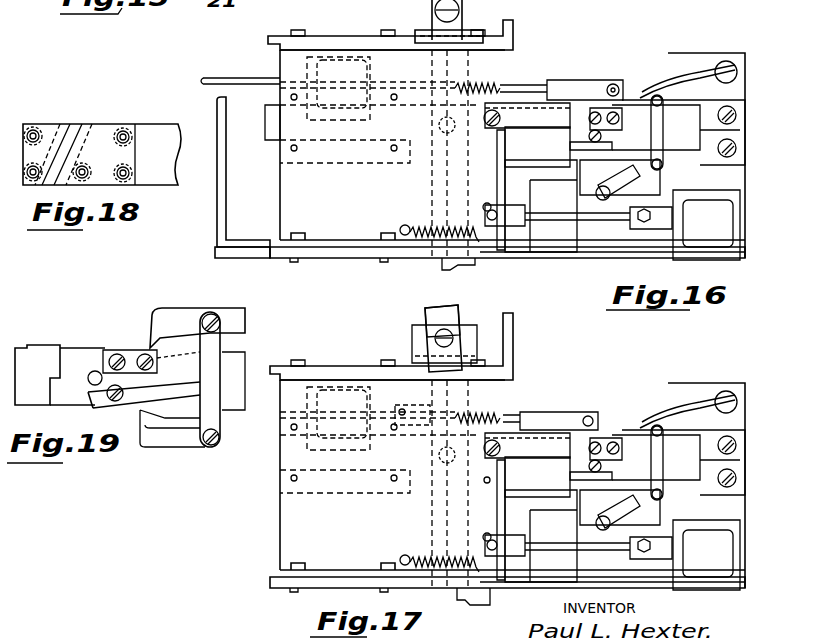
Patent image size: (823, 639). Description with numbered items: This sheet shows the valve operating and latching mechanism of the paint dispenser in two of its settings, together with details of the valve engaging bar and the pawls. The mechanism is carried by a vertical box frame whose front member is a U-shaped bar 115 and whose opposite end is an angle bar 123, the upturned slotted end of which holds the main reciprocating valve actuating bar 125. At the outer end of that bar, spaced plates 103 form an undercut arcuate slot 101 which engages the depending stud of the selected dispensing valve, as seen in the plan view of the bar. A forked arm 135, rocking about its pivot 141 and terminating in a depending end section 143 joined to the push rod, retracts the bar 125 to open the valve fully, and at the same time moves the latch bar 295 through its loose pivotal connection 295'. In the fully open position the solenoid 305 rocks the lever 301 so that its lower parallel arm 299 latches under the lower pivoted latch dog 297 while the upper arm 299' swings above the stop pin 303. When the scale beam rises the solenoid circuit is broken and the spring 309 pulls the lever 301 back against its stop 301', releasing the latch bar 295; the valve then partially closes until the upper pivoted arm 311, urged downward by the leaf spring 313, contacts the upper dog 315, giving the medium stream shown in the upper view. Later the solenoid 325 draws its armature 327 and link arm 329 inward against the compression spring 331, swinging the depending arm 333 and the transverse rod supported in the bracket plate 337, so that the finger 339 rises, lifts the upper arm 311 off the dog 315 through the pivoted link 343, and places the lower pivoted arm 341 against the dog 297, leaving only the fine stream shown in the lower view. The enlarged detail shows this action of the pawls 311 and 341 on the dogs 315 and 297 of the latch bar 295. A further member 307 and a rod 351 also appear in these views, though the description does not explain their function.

In FIG. 18, the undercut arcuate slot 101 is at (90, 128).
In FIG. 18, the spaced plates 103 is at (60, 116).
In FIG. 16, the U-shaped bar 115 is at (222, 234).
In FIG. 16, the angle bar 123 is at (357, 27).
In FIG. 17, the angle bar 123 is at (391, 344).
In FIG. 18, the valve actuating bar 125 is at (160, 133).
In FIG. 17, the forked arm 135 is at (478, 311).
In FIG. 16, the pivot 141 is at (463, 13).
In FIG. 17, the pivot 141 is at (422, 334).
In FIG. 16, the depending end section 143 is at (470, 265).
In FIG. 17, the depending end section 143 is at (468, 613).
In FIG. 16, the latch bar 295 is at (486, 145).
In FIG. 17, the latch bar 295 is at (708, 464).
In FIG. 19, the latch bar 295 is at (60, 360).
In FIG. 16, the loose pivotal connection 295' is at (361, 158).
In FIG. 17, the loose pivotal connection 295' is at (366, 487).
In FIG. 16, the lower pivoted latch dog 297 is at (635, 127).
In FIG. 17, the lower pivoted latch dog 297 is at (655, 457).
In FIG. 19, the lower pivoted latch dog 297 is at (205, 330).
In FIG. 16, the lower parallel arm 299 is at (541, 206).
In FIG. 17, the lower parallel arm 299 is at (541, 536).
In FIG. 16, the upper arm 299' is at (532, 93).
In FIG. 17, the upper arm 299' is at (531, 414).
In FIG. 16, the lever 301 is at (534, 202).
In FIG. 16, the stop 301' is at (435, 200).
In FIG. 17, the stop 301' is at (447, 523).
In FIG. 16, the stop pin 303 is at (527, 138).
In FIG. 17, the stop pin 303 is at (528, 468).
In FIG. 19, the stop pin 303 is at (90, 372).
In FIG. 16, the solenoid 305 is at (706, 225).
In FIG. 17, the solenoid 305 is at (706, 555).
In FIG. 17, the member 307 is at (456, 481).
In FIG. 16, the spring 309 is at (424, 214).
In FIG. 17, the spring 309 is at (434, 552).
In FIG. 16, the upper pivoted arm 311 is at (640, 90).
In FIG. 17, the upper pivoted arm 311 is at (683, 430).
In FIG. 19, the upper pivoted arm 311 is at (180, 318).
In FIG. 17, the leaf spring 313 is at (730, 387).
In FIG. 16, the upper dog 315 is at (614, 84).
In FIG. 17, the upper dog 315 is at (640, 409).
In FIG. 19, the upper dog 315 is at (130, 341).
In FIG. 16, the solenoid 325 is at (312, 72).
In FIG. 17, the solenoid 325 is at (342, 393).
In FIG. 17, the armature 327 is at (414, 406).
In FIG. 16, the link arm 329 is at (577, 88).
In FIG. 17, the link arm 329 is at (559, 410).
In FIG. 17, the spring 331 is at (509, 375).
In FIG. 17, the depending arm 333 is at (580, 423).
In FIG. 17, the bracket plate 337 is at (578, 541).
In FIG. 16, the finger 339 is at (650, 177).
In FIG. 17, the finger 339 is at (633, 514).
In FIG. 16, the lower pivoted arm 341 is at (667, 157).
In FIG. 17, the lower pivoted arm 341 is at (658, 497).
In FIG. 19, the lower pivoted arm 341 is at (235, 440).
In FIG. 16, the pivoted link 343 is at (668, 130).
In FIG. 17, the pivoted link 343 is at (693, 459).
In FIG. 19, the pivoted link 343 is at (213, 342).
In FIG. 16, the rod 351 is at (238, 65).